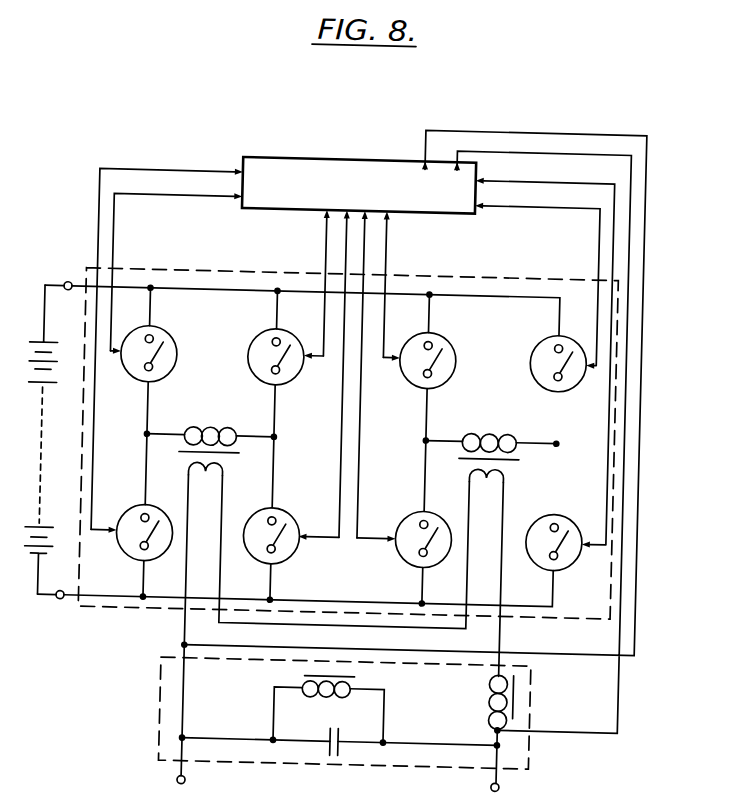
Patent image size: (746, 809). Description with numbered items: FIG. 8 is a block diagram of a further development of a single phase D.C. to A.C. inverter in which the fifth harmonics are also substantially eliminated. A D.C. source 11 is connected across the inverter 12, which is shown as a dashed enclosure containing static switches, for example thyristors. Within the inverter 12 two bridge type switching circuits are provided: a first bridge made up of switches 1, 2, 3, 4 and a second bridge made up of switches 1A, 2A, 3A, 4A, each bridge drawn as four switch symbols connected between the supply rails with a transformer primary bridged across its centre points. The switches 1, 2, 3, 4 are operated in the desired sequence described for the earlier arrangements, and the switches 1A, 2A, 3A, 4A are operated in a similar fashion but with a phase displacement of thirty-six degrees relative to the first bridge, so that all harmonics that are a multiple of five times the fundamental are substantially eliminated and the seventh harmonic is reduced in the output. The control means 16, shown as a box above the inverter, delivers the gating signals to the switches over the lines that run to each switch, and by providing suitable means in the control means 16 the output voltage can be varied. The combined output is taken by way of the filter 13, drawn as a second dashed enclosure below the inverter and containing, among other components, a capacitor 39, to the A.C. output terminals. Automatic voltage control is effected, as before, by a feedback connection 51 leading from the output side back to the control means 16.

The control means 16 is at (320, 149).
The feedback connection 51 is at (637, 156).
The inverter 12 is at (477, 268).
The D.C. source 11 is at (54, 471).
The switch 1 is at (134, 372).
The switch 2 is at (132, 540).
The switch 3 is at (297, 368).
The switch 4 is at (304, 539).
The switch 1A is at (414, 370).
The switch 2A is at (418, 534).
The switch 3A is at (582, 371).
The switch 4A is at (584, 552).
The filter 13 is at (177, 696).
The capacitor 39 is at (358, 730).